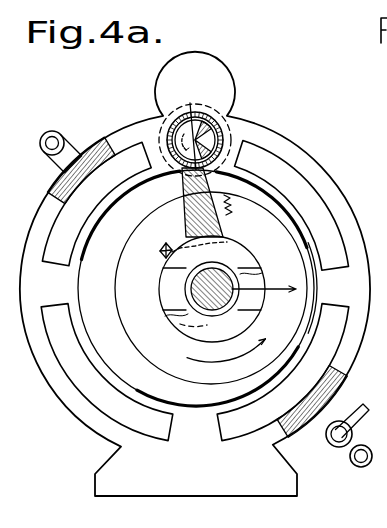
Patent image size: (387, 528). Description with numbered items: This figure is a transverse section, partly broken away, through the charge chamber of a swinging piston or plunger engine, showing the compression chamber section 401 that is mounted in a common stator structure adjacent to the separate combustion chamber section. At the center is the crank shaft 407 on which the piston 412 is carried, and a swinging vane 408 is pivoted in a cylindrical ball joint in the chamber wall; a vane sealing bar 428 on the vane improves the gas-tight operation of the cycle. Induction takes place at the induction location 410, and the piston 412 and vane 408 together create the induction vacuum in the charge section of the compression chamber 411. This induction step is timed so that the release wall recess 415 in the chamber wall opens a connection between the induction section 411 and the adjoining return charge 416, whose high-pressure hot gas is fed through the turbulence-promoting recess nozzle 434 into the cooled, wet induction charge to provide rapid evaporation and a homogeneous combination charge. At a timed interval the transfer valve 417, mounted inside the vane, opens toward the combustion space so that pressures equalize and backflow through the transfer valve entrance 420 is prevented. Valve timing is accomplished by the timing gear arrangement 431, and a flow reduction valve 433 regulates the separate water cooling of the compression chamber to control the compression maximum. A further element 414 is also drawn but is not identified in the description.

The compression chamber section 401 is at (340, 197).
The crank shaft 407 is at (240, 289).
The swinging vane 408 is at (156, 209).
The induction location 410 is at (190, 128).
The charge section of the compression chamber 411 is at (103, 291).
The piston 412 is at (135, 331).
The flux band left portion 414 is at (183, 174).
The release wall recess 415 is at (313, 292).
The return charge 416 is at (253, 188).
The transfer valve 417 is at (219, 111).
The transfer valve entrance 420 is at (292, 206).
The vane sealing bar 428 is at (226, 204).
The timing gear arrangement 431 is at (160, 251).
The flow reduction valve 433 is at (323, 443).
The recess nozzle 434 is at (310, 322).